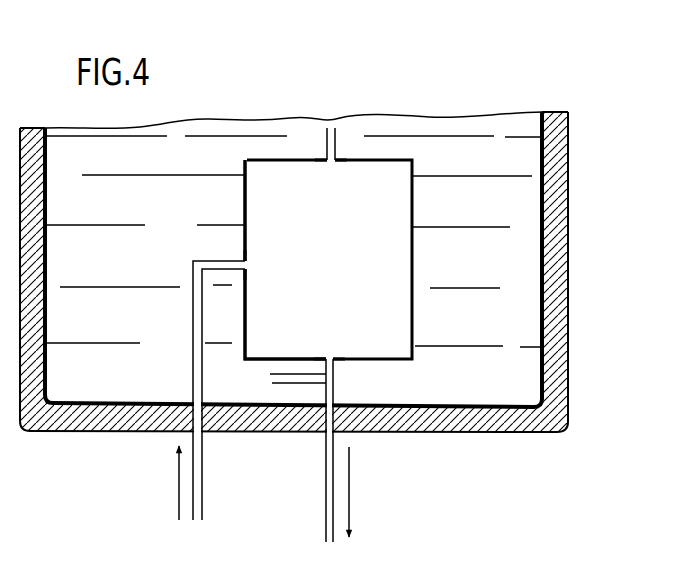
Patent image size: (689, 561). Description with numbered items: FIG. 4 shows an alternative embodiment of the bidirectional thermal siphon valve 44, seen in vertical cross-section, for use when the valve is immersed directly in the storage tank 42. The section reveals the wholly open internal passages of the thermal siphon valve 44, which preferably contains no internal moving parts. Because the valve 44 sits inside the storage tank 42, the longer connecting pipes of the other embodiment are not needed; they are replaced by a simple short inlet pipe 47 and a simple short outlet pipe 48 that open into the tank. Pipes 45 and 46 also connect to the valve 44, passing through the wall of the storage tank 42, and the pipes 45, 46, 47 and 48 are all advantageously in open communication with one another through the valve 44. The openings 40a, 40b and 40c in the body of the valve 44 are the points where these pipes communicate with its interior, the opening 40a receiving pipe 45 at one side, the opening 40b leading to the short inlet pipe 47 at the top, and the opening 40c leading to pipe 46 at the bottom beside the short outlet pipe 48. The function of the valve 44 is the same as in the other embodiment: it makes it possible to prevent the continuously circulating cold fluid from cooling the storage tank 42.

The inlet opening 40a is at (245, 262).
The upper opening 40b is at (327, 157).
The outlet opening 40c is at (336, 364).
The storage tank 42 is at (553, 330).
The thermal siphon valve 44 is at (417, 270).
The pipe 45 is at (198, 483).
The pipe 46 is at (327, 480).
The inlet pipe 47 is at (336, 137).
The outlet pipe 48 is at (292, 381).